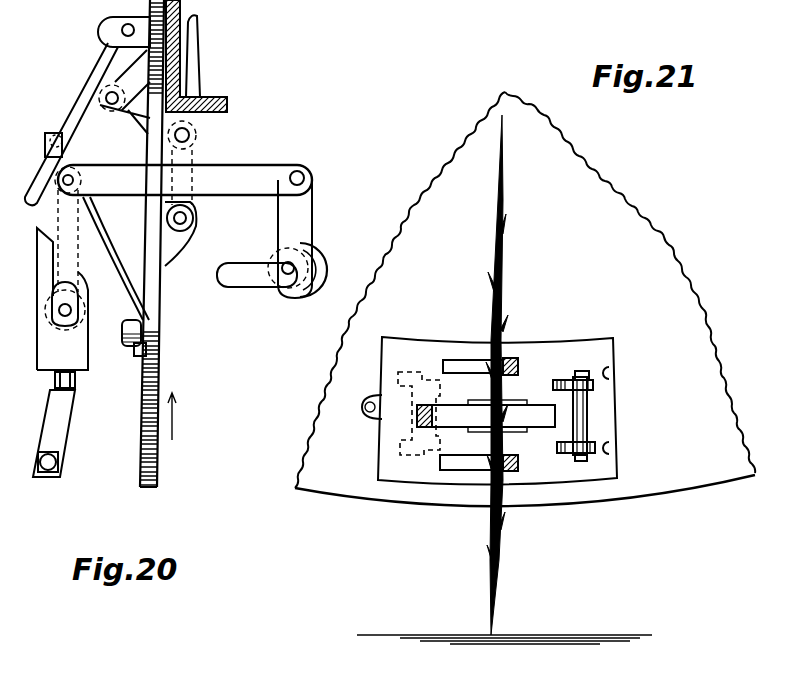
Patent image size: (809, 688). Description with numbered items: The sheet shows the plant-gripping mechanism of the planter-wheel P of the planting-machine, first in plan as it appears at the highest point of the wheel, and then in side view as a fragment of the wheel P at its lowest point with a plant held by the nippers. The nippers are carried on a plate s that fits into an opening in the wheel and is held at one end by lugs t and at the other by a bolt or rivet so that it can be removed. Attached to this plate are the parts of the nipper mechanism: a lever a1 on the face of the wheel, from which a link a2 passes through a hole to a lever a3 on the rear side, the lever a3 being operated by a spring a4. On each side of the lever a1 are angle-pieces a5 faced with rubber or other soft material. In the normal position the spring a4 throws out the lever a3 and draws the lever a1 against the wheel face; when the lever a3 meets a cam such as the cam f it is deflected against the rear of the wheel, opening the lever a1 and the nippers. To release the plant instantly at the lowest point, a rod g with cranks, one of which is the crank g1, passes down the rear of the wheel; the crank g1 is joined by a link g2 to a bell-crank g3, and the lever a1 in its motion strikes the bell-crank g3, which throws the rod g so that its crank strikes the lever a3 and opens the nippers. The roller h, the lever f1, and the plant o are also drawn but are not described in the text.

In FIG. 20, the planter-wheel P is at (160, 318).
In FIG. 21, the planter-wheel P is at (525, 299).
In FIG. 20, the lever a1 is at (196, 135).
In FIG. 21, the lever a1 is at (548, 418).
In FIG. 20, the link a2 is at (140, 116).
In FIG. 20, the lever a3 is at (88, 88).
In FIG. 21, the lever a3 is at (406, 437).
In FIG. 20, the spring a4 is at (100, 214).
In FIG. 20, the angle-pieces a5 is at (227, 104).
In FIG. 21, the angle-pieces a5 is at (526, 466).
In FIG. 20, the rod g is at (80, 318).
In FIG. 20, the crank g1 is at (65, 268).
In FIG. 20, the link g2 is at (255, 178).
In FIG. 20, the bell-crank g3 is at (298, 228).
In FIG. 20, the roller h is at (312, 272).
In FIG. 20, the cam f is at (62, 299).
In FIG. 20, the lever / bracket f1 is at (36, 449).
In FIG. 21, the ornament stem o is at (505, 246).
In FIG. 21, the plate s is at (462, 353).
In FIG. 21, the lugs t is at (614, 448).